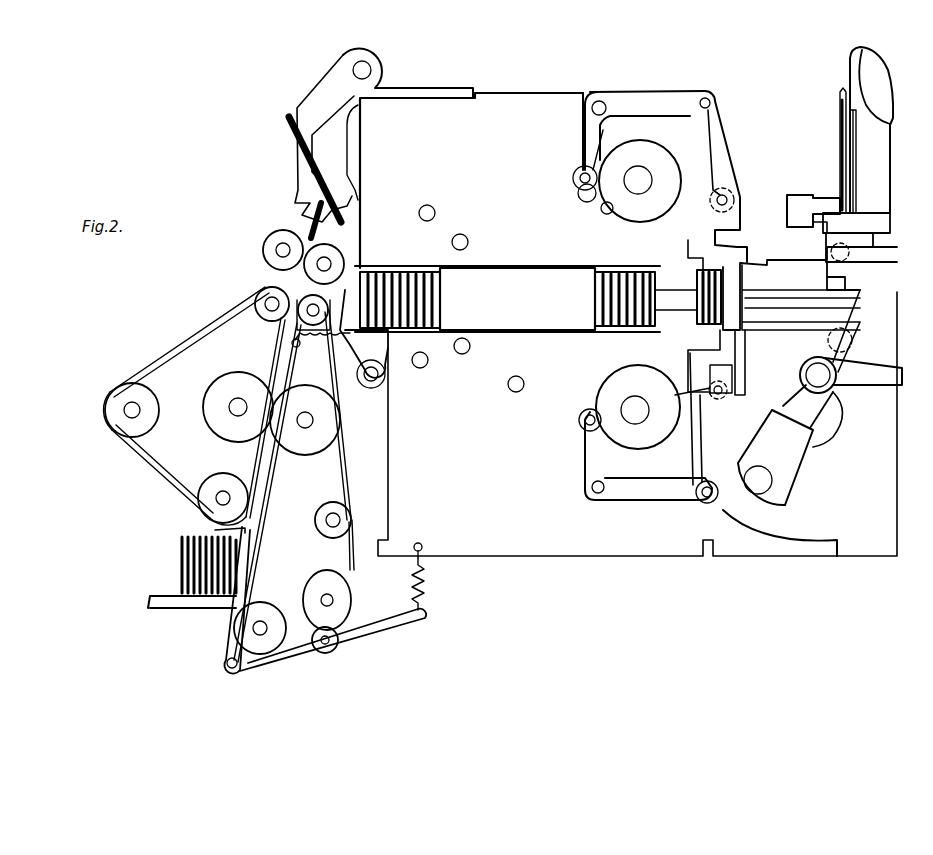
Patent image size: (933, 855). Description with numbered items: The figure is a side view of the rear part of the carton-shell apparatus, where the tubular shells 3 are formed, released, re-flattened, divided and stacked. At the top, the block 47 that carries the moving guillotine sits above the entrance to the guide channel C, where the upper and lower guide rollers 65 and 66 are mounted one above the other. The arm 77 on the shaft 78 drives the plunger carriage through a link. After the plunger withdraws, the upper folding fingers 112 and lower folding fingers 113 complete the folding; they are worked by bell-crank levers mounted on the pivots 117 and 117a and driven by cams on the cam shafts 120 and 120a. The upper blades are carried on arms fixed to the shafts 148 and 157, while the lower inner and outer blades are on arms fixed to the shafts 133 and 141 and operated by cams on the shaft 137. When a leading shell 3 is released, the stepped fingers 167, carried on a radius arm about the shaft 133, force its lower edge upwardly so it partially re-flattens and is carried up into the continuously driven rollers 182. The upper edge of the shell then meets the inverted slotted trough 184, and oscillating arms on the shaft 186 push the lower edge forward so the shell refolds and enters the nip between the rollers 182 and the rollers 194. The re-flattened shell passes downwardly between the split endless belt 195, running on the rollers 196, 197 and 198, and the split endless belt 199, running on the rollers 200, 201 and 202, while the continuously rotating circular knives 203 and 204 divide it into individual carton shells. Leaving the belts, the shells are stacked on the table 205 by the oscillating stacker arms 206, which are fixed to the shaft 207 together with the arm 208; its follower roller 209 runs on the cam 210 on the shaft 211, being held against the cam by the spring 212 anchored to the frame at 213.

The tubular shell 3 is at (305, 224).
The guide channel C is at (550, 280).
The block 47 is at (796, 194).
The guide roller 65 is at (832, 252).
The guide roller 66 is at (830, 333).
The arm 77 is at (860, 352).
The shaft 78 is at (772, 480).
The upper folding fingers 112 is at (750, 258).
The lower folding fingers 113 is at (746, 340).
The pivot 117 is at (599, 100).
The pivot 117a is at (592, 487).
The cam shaft 120 is at (643, 178).
The cam shaft 120a is at (633, 402).
The shaft 133 is at (426, 366).
The shaft 137 is at (524, 383).
The shaft 141 is at (470, 346).
The shaft 148 is at (466, 237).
The shaft 157 is at (433, 208).
The stepped fingers 167 is at (385, 365).
The rollers 182 is at (304, 266).
The inverted slotted trough 184 is at (300, 202).
The shaft 186 is at (391, 126).
The rollers 194 is at (263, 250).
The split endless belt 195 is at (225, 314).
The roller 196 is at (268, 320).
The roller 197 is at (118, 400).
The roller 198 is at (208, 486).
The split endless belt 199 is at (355, 445).
The roller 200 is at (292, 332).
The roller 201 is at (318, 512).
The roller 202 is at (258, 610).
The circular knife 203 is at (212, 402).
The circular knife 204 is at (302, 445).
The table 205 is at (162, 598).
The stacker arms 206 is at (236, 617).
The shaft 207 is at (226, 663).
The arm 208 is at (400, 622).
The follower roller 209 is at (335, 645).
The cam 210 is at (313, 572).
The shaft 211 is at (333, 600).
The spring 212 is at (430, 584).
The frame anchorage 213 is at (422, 544).